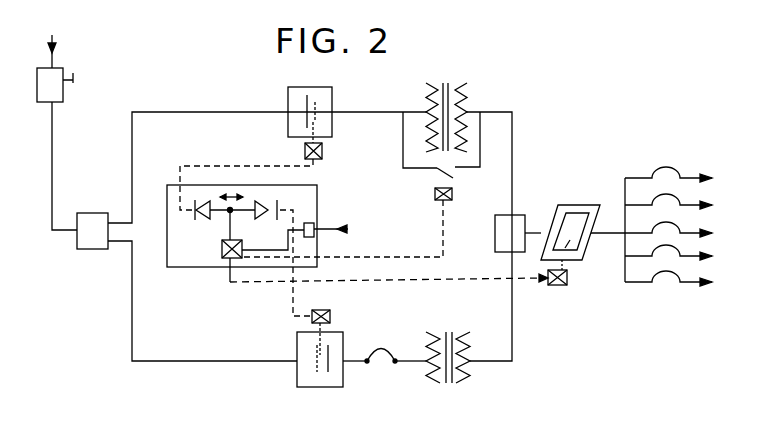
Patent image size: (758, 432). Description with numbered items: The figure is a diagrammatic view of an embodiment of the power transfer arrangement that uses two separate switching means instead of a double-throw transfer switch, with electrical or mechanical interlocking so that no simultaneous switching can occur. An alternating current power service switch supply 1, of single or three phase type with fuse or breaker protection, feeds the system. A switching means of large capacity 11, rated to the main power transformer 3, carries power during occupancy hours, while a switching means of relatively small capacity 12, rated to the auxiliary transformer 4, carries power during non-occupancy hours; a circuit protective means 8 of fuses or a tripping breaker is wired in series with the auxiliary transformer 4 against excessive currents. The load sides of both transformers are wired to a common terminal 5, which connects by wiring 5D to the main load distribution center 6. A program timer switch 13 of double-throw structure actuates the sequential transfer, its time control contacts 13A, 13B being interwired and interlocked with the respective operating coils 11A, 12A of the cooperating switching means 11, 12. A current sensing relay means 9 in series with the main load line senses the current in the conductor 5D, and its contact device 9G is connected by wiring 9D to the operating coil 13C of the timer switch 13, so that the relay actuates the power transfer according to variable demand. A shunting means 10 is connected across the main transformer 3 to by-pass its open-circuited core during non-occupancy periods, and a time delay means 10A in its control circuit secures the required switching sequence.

The alternating current power service switch supply 1 is at (65, 94).
The main power transformer 3 is at (462, 95).
The auxiliary transformer 4 is at (455, 384).
The common terminal 5 is at (495, 224).
The wiring 5D is at (618, 238).
The main load distribution center 6 is at (633, 178).
The circuit protective means 8 is at (381, 365).
The current sensing relay means 9 is at (582, 205).
The wiring 9D is at (418, 281).
The contact device 9G is at (553, 285).
The shunting means 10 is at (441, 151).
The time delay means 10A is at (347, 222).
The switching means of large capacity 11 is at (330, 93).
The operating coil 11A is at (322, 151).
The switching means of relatively small capacity 12 is at (296, 332).
The operating coil 12A is at (331, 316).
The program timer switch 13 is at (318, 216).
The time control contact 13A is at (200, 219).
The time control contact 13B is at (282, 258).
The operating coil 13C is at (218, 250).